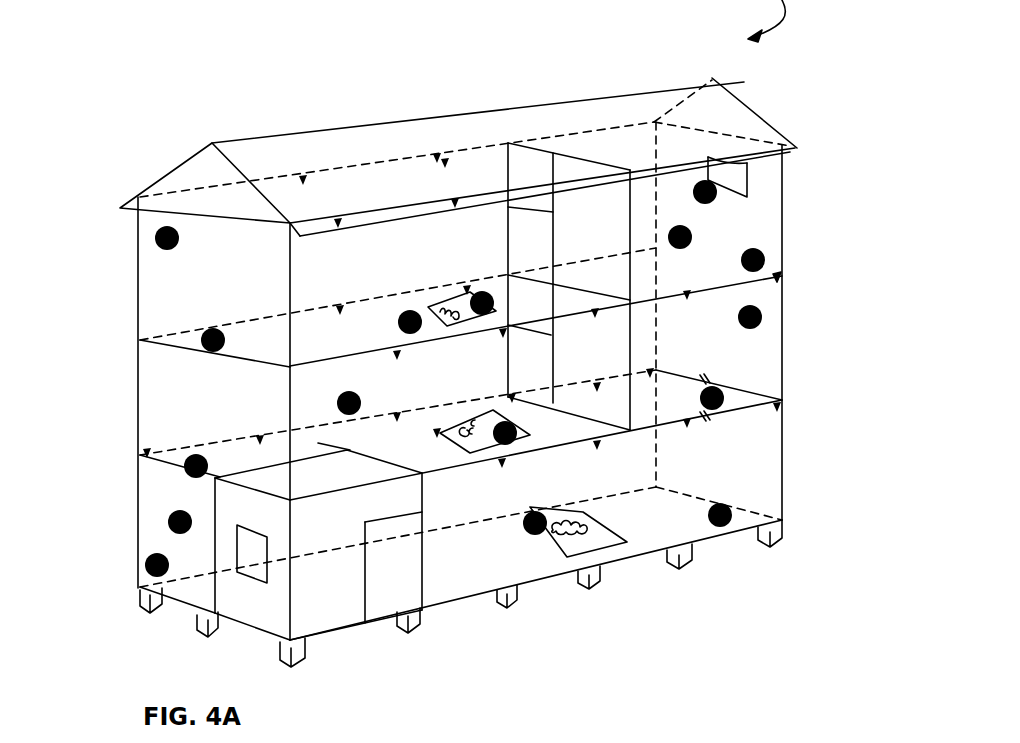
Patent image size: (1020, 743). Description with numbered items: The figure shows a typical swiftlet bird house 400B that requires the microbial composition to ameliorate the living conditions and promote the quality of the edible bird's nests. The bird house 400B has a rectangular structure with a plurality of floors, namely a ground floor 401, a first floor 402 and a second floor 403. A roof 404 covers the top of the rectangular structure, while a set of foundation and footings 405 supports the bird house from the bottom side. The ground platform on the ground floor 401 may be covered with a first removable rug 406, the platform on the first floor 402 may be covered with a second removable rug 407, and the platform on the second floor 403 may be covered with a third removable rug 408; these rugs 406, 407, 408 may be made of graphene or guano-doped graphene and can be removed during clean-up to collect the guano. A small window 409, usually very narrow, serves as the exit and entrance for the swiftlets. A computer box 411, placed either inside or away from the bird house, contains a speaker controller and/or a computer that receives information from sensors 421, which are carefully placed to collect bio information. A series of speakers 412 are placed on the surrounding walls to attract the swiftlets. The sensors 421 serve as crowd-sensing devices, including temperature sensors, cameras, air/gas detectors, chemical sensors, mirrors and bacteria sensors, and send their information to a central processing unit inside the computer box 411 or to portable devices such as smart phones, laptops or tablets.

The modular display structure 400B is at (735, 742).
The ground floor 401 is at (770, 464).
The first floor 402 is at (253, 437).
The second floor 403 is at (153, 293).
The roof 404 is at (192, 157).
The foundation and footings 405 is at (150, 598).
The first removable rug 406 is at (607, 537).
The second removable rug 407 is at (465, 449).
The third removable rug 408 is at (435, 307).
The small window 409 is at (750, 160).
The computer box 411 is at (327, 567).
The speakers 412 is at (782, 280).
The sensors 421 is at (156, 237).